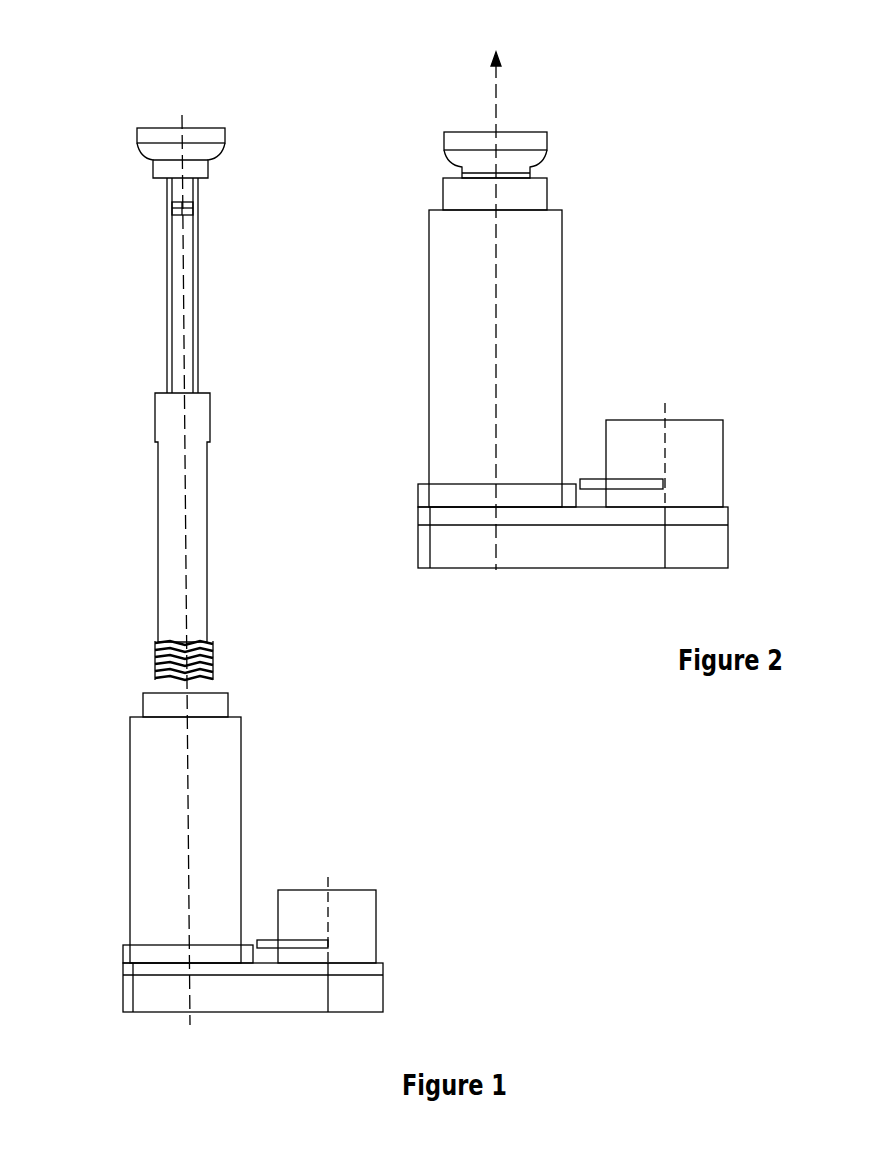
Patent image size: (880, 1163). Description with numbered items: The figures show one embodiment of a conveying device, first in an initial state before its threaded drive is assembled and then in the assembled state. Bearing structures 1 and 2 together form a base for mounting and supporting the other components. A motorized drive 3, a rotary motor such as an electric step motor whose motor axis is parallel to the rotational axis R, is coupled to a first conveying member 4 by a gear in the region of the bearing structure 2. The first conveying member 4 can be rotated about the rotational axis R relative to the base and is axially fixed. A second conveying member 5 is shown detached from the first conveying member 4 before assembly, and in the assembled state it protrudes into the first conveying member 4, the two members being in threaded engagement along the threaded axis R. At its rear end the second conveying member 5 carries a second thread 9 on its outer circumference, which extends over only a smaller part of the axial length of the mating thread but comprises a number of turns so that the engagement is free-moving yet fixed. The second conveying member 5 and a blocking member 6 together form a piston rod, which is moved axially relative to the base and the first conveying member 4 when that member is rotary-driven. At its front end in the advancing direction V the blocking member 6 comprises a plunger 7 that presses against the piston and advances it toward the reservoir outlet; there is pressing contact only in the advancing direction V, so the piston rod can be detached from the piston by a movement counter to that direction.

In FIG. 1, the bearing structure 1 is at (163, 828).
In FIG. 2, the bearing structure 1 is at (463, 406).
In FIG. 1, the bearing structure 2 is at (247, 992).
In FIG. 2, the bearing structure 2 is at (595, 553).
In FIG. 1, the motorized drive 3 is at (352, 922).
In FIG. 2, the motorized drive 3 is at (698, 447).
In FIG. 1, the first conveying member 4 is at (160, 710).
In FIG. 2, the first conveying member 4 is at (460, 197).
In FIG. 1, the second conveying member 5 is at (174, 530).
In FIG. 1, the blocking member 6 is at (178, 277).
In FIG. 1, the plunger 7 is at (160, 135).
In FIG. 2, the plunger 7 is at (475, 142).
In FIG. 1, the second thread 9 is at (160, 665).
In FIG. 1, the rotational axis R is at (187, 335).
In FIG. 2, the rotational axis R is at (498, 316).
In FIG. 2, the advancing direction V is at (512, 311).